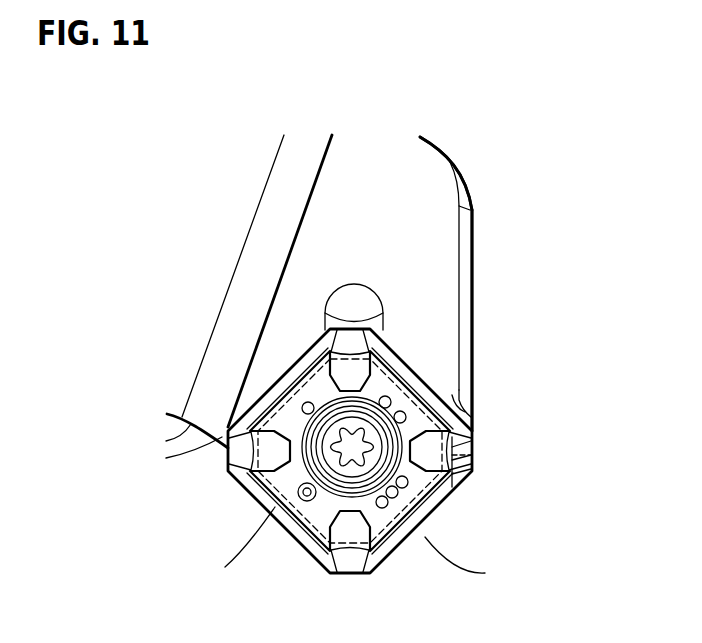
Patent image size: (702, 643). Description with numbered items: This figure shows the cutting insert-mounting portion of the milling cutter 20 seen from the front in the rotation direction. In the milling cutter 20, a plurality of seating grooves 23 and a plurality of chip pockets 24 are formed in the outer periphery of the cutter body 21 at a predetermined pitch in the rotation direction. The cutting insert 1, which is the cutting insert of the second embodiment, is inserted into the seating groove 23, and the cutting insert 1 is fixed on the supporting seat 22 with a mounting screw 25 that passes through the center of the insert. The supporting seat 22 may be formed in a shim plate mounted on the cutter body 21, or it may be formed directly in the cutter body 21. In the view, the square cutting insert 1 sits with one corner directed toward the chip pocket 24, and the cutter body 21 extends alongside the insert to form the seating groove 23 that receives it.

The cutting insert 1 is at (417, 532).
The milling cutter 20 is at (477, 237).
The cutter body 21 is at (447, 321).
The supporting seat 22 is at (475, 463).
The seating groove 23 is at (471, 418).
The chip pocket 24 is at (417, 198).
The mounting screw 25 is at (335, 455).